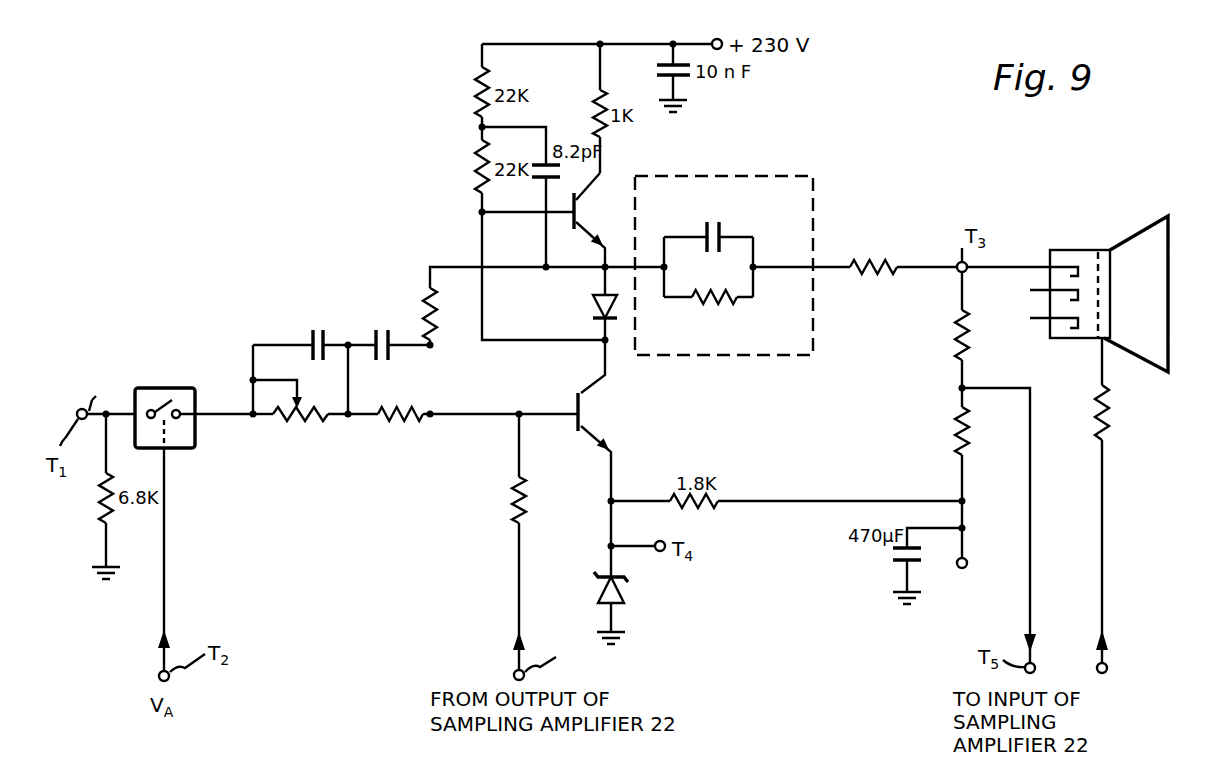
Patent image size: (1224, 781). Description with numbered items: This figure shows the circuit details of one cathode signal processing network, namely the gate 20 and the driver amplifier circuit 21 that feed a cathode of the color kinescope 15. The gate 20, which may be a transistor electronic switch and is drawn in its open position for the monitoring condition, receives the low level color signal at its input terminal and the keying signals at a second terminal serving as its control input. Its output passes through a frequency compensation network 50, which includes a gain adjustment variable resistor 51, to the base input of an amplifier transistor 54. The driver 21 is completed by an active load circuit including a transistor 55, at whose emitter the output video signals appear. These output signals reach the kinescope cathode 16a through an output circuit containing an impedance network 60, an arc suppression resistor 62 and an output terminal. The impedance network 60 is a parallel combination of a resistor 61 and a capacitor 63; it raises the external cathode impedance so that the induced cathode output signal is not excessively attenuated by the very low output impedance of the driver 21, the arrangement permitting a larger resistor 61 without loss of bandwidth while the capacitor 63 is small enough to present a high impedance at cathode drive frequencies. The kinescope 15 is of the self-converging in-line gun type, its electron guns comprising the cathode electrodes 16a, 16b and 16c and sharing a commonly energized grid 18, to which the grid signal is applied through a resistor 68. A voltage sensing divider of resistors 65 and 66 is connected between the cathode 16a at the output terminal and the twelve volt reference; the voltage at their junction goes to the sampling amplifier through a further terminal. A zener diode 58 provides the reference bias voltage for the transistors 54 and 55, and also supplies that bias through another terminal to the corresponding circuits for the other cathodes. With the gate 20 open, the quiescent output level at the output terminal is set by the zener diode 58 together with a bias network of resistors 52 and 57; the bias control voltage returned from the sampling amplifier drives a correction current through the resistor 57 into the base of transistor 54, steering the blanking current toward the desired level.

The color kinescope 15 is at (1140, 232).
The cathode intensity control electrode 16a is at (1064, 258).
The cathode intensity control electrode 16b is at (1036, 287).
The cathode intensity control electrode 16c is at (1036, 322).
The grid 18 is at (1103, 320).
The gate 20 is at (152, 390).
The driver amplifier circuit 21 is at (440, 478).
The frequency compensation network 50 is at (352, 482).
The gain adjustment variable resistor 51 is at (332, 402).
The resistor 52 is at (425, 292).
The amplifier transistor 54 is at (615, 425).
The transistor 55 is at (614, 220).
The resistor 57 is at (512, 508).
The zener diode 58 is at (626, 592).
The impedance network 60 is at (736, 176).
The resistor 61 is at (731, 308).
The arc suppression resistor 62 is at (875, 253).
The capacitor 63 is at (724, 232).
The resistor 65 is at (955, 329).
The resistor 66 is at (954, 443).
The resistor 68 is at (1106, 442).